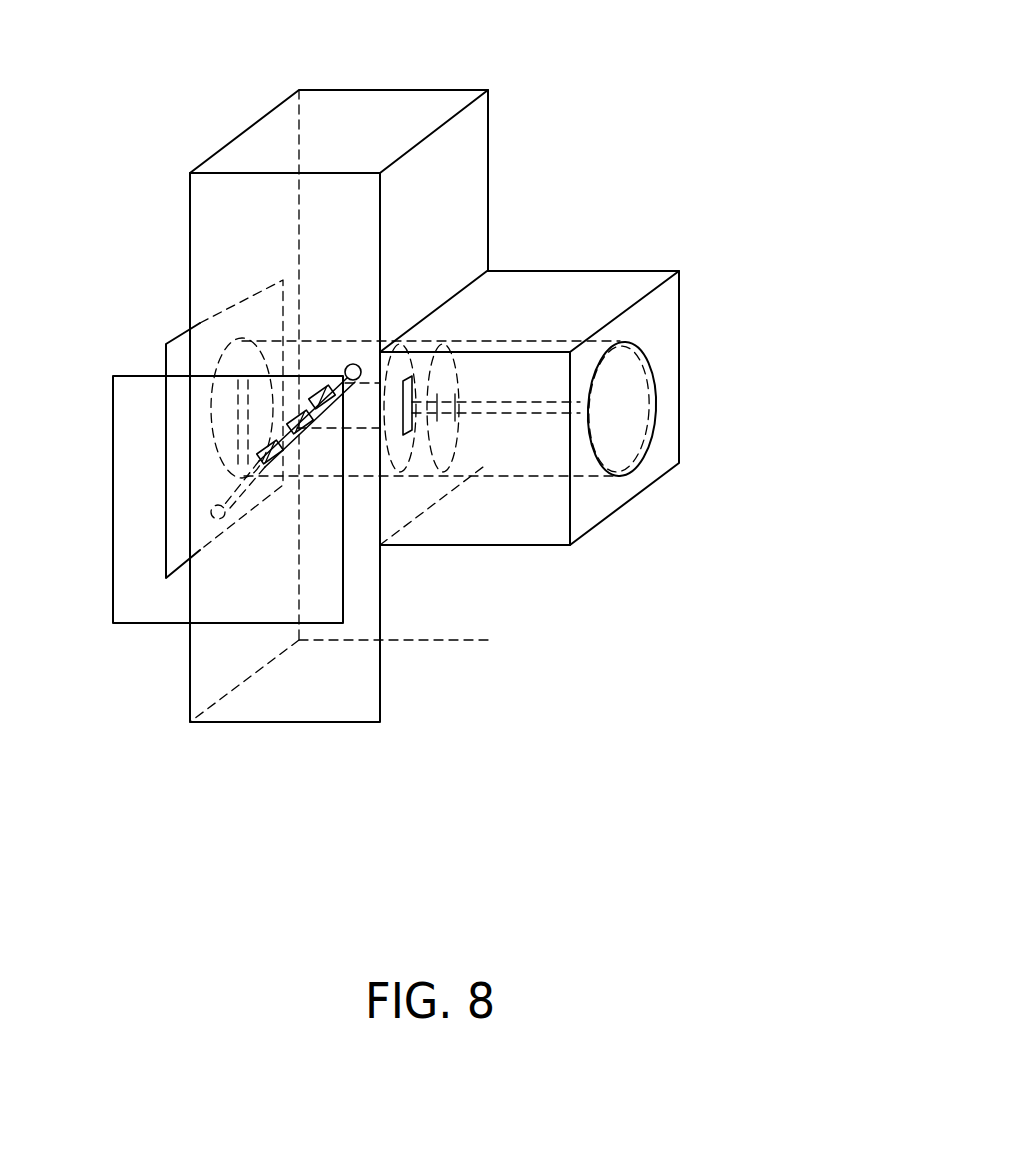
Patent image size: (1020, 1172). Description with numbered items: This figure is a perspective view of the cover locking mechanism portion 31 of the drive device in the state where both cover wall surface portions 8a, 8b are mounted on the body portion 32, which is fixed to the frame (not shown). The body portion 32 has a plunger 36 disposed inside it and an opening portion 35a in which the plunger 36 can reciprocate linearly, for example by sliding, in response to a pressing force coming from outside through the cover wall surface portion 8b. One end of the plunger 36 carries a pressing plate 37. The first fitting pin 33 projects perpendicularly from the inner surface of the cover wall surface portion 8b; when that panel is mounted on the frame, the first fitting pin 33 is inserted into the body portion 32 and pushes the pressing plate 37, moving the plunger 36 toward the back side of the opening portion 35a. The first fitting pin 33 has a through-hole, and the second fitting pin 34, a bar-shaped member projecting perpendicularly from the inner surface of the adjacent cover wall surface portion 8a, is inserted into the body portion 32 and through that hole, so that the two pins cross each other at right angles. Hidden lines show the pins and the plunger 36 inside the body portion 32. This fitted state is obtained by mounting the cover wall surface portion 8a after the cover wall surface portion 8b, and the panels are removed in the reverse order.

The cover locking mechanism portion 31 is at (667, 697).
The body portion 32 is at (577, 283).
The first fitting pin 33 is at (242, 334).
The second fitting pin 34 is at (225, 516).
The opening portion 35a is at (658, 410).
The plunger 36 is at (532, 457).
The pressing plate 37 is at (455, 338).
The cover wall surface portion 8a is at (140, 605).
The cover wall surface portion 8b is at (166, 360).